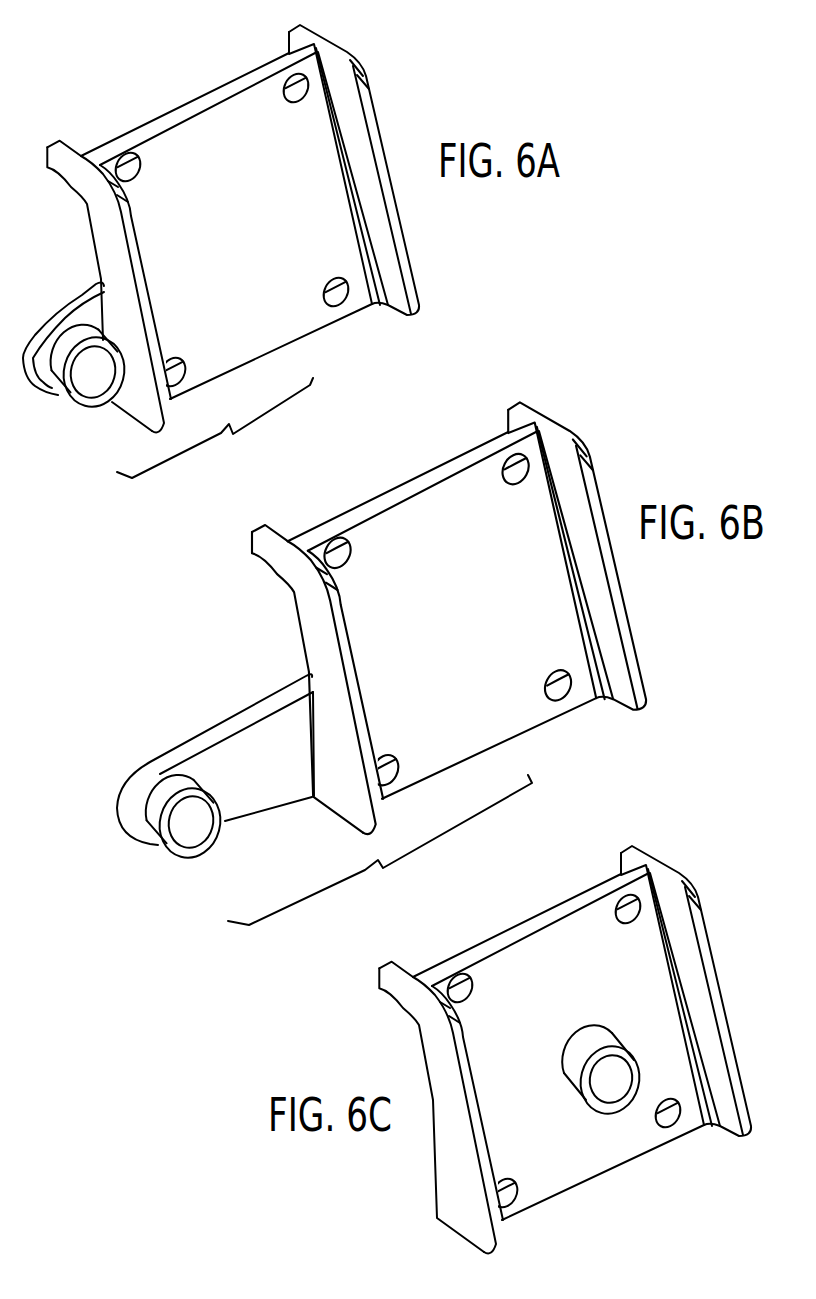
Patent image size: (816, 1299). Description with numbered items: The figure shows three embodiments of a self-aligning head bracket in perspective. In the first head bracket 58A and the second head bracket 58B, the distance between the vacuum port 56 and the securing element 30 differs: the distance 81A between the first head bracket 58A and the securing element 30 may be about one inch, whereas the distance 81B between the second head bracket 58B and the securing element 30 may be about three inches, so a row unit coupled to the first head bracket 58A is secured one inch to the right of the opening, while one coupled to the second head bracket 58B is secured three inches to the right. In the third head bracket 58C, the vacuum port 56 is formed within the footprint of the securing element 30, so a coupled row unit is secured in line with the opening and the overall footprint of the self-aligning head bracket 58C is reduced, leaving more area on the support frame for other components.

In FIG. 6A, the securing element 30 is at (302, 315).
In FIG. 6B, the securing element 30 is at (523, 708).
In FIG. 6C, the securing element 30 is at (640, 1137).
In FIG. 6A, the vacuum port 56 is at (60, 400).
In FIG. 6B, the vacuum port 56 is at (165, 853).
In FIG. 6C, the vacuum port 56 is at (583, 1108).
In FIG. 6A, the first head bracket 58A is at (149, 83).
In FIG. 6B, the second head bracket 58B is at (404, 473).
In FIG. 6C, the third head bracket 58C is at (534, 905).
In FIG. 6A, the distance 81A is at (215, 428).
In FIG. 6B, the distance 81B is at (380, 850).